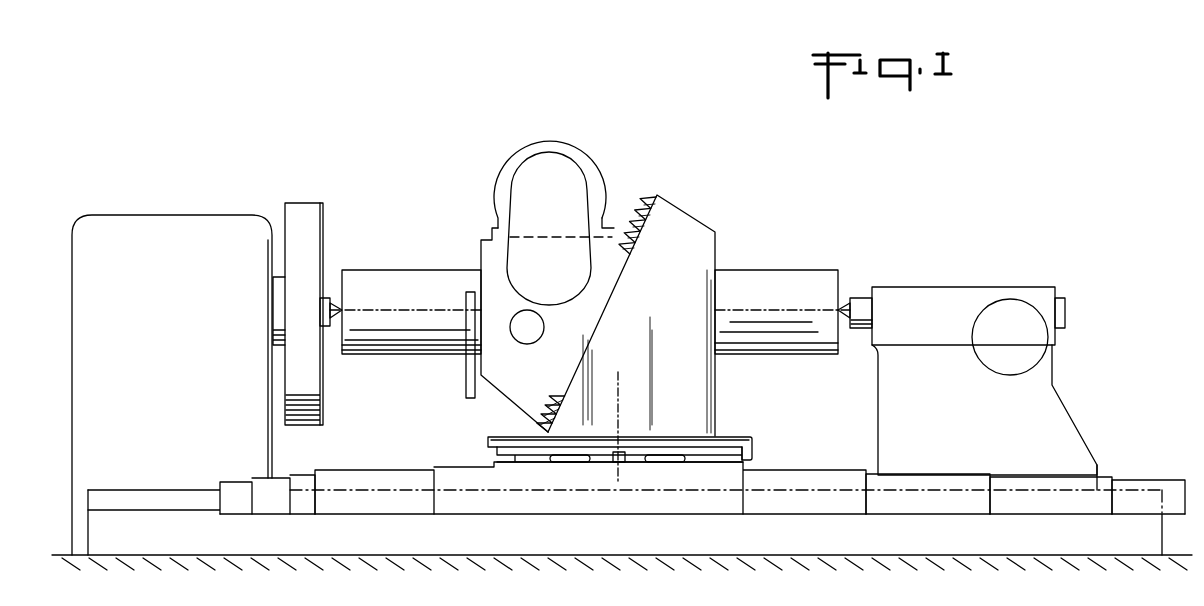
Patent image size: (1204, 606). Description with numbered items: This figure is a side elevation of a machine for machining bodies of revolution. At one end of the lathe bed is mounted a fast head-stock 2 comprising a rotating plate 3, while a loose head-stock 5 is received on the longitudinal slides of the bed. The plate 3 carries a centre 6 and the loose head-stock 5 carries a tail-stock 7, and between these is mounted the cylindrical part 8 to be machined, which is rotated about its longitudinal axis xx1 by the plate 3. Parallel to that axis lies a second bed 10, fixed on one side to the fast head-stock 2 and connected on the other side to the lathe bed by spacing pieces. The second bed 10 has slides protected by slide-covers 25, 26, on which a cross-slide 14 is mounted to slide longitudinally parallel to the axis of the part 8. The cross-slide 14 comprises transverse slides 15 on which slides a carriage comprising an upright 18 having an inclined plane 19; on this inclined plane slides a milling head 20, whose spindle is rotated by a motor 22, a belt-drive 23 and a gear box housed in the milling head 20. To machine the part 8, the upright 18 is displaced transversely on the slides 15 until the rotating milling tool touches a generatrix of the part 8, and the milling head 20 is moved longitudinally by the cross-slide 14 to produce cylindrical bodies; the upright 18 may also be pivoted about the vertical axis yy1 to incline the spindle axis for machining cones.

The fast head-stock 2 is at (173, 232).
The rotating plate 3 is at (310, 218).
The loose head-stock 5 is at (1052, 408).
The centre 6 is at (333, 302).
The tail-stock 7 is at (848, 300).
The part to be machined 8 is at (442, 276).
The second bed 10 is at (268, 545).
The cross-slide 14 is at (520, 500).
The transverse slides 15 is at (740, 448).
The upright 18 is at (700, 262).
The inclined plane 19 is at (660, 203).
The milling head 20 is at (614, 252).
The motor 22 is at (588, 166).
The belt-drive 23 is at (548, 165).
The slide-cover 25 is at (352, 500).
The slide-cover 26 is at (960, 505).